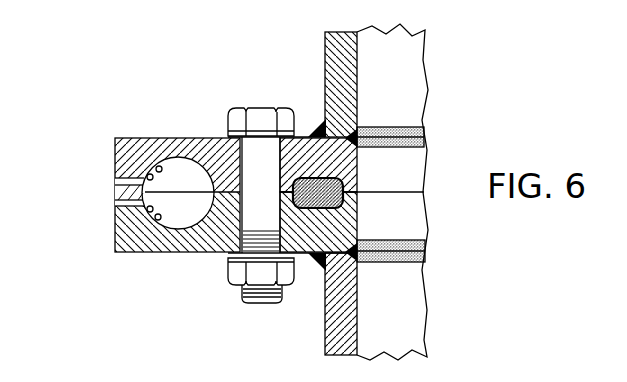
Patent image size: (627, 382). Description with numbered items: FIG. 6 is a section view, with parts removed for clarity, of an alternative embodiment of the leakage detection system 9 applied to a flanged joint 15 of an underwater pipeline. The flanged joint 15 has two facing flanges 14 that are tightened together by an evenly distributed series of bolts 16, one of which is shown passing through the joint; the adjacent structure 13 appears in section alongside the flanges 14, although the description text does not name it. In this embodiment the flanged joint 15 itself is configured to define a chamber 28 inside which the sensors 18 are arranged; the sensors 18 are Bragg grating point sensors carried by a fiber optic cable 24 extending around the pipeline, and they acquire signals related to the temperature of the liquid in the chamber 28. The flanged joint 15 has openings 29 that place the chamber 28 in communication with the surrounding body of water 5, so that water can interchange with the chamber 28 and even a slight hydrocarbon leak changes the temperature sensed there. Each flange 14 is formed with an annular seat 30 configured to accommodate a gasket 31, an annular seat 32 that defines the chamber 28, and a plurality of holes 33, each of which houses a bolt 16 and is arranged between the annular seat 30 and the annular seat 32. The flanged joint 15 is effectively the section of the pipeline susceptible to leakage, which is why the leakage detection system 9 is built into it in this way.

The body of water 5 is at (94, 231).
The leakage detection system 9 is at (93, 272).
The wall 13 is at (415, 55).
The flange 14 is at (131, 138).
The flanged joint 15 is at (113, 107).
The bolt 16 is at (247, 172).
The sensor 18 is at (165, 176).
The fiber optic cable 24 is at (148, 168).
The chamber 28 is at (173, 159).
The opening 29 is at (114, 180).
The annular seat 30 is at (351, 172).
The gasket 31 is at (324, 203).
The annular seat 32 is at (199, 207).
The hole 33 is at (338, 164).